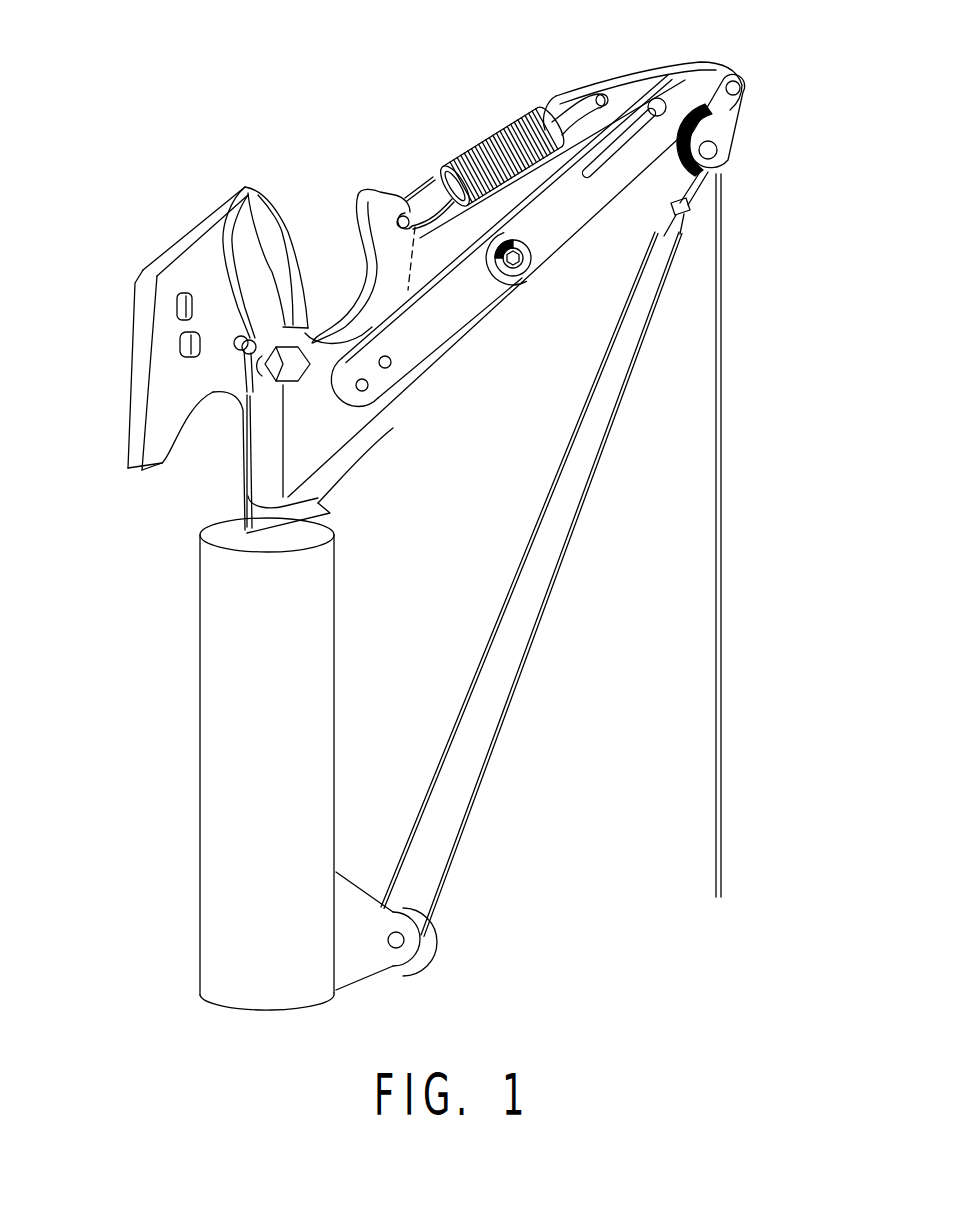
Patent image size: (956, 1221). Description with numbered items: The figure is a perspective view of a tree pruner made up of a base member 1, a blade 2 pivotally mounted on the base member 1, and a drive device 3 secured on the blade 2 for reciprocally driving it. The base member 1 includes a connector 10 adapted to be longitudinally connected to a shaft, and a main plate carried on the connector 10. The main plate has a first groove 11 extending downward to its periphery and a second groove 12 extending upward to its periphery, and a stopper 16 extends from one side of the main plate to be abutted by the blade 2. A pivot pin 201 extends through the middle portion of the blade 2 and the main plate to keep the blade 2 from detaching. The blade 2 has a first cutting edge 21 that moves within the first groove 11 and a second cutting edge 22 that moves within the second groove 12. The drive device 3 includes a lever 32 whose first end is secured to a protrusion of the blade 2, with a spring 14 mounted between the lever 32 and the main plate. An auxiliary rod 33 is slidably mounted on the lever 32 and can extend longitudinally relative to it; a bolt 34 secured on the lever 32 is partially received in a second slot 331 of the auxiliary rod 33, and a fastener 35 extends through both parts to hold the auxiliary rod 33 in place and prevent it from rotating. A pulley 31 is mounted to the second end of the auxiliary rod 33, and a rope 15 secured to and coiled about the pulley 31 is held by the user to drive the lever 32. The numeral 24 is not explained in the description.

The base member 1 is at (137, 228).
The connector 10 is at (256, 737).
The first groove 11 is at (207, 428).
The second groove 12 is at (330, 307).
The spring 14 is at (500, 158).
The rope 15 is at (720, 637).
The stopper 16 is at (236, 347).
The blade 2 is at (358, 446).
The pivot pin 201 is at (298, 367).
The first cutting edge 21 is at (265, 457).
The second cutting edge 22 is at (278, 257).
The anvil blade 24 is at (214, 281).
The drive device 3 is at (505, 297).
The pulley 31 is at (720, 172).
The lever 32 is at (443, 317).
The auxiliary rod 33 is at (568, 207).
The second slot 331 is at (622, 140).
The bolt 34 is at (656, 102).
The fastener 35 is at (530, 272).